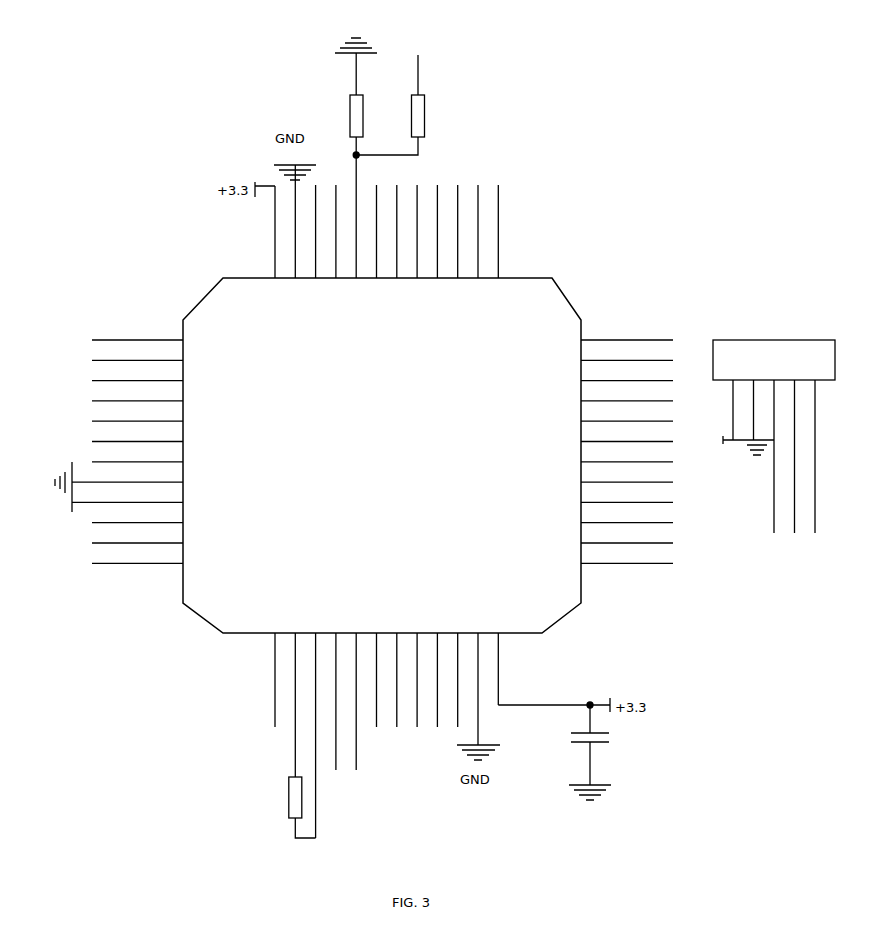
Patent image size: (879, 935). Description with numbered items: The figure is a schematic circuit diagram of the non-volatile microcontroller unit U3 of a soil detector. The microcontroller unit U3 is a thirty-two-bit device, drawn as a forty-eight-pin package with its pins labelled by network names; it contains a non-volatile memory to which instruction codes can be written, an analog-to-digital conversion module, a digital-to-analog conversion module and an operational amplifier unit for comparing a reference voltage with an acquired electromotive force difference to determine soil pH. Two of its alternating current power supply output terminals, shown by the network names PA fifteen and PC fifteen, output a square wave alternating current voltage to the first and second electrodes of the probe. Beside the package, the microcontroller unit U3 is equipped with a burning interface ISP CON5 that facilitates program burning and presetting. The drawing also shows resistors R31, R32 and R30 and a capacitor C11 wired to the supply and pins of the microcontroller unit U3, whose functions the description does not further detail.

The non-volatile microcontroller unit U3 is at (360, 496).
The resistor 10K R31 is at (364, 87).
The resistor 10K R32 is at (404, 98).
The resistor 100R R30 is at (276, 807).
The capacitor 104 C11 is at (575, 766).
The burning interface ISP CON5 is at (774, 466).